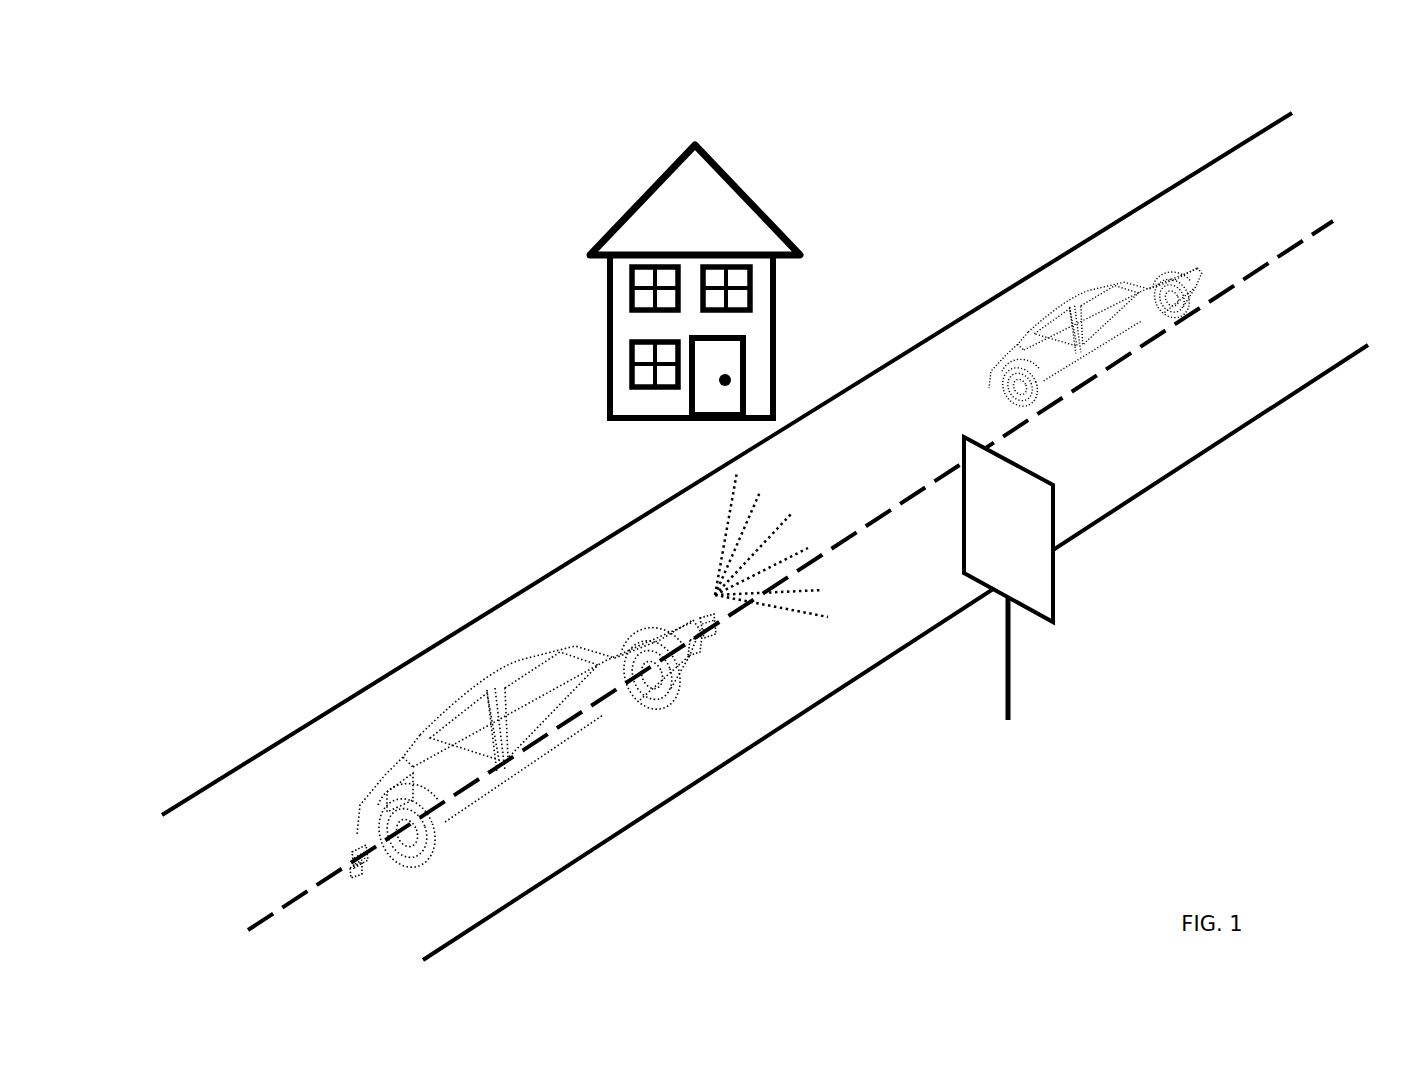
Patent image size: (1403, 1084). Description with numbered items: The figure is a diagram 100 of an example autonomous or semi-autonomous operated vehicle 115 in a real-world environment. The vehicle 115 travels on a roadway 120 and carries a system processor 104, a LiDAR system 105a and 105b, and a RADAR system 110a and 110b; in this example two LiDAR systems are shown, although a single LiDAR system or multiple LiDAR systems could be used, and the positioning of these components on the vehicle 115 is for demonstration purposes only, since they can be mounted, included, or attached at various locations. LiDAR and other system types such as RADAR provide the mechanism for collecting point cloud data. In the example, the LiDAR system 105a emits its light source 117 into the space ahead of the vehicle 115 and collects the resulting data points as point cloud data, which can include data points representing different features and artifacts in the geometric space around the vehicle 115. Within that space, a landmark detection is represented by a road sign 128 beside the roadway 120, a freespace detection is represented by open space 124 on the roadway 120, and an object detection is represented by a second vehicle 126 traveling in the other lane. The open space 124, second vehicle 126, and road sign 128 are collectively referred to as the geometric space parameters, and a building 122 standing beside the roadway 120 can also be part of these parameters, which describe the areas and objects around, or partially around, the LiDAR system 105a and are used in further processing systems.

The diagram 100 is at (227, 113).
The system processor 104 is at (395, 788).
The LiDAR system 105a is at (708, 627).
The LiDAR system 105b is at (352, 850).
The RADAR system 110a is at (695, 643).
The RADAR system 110b is at (350, 868).
The vehicle 115 is at (560, 642).
The light source 117 is at (825, 587).
The roadway 120 is at (1092, 237).
The building 122 is at (607, 338).
The open space 124 is at (887, 413).
The second vehicle 126 is at (1125, 325).
The road sign 128 is at (1055, 593).